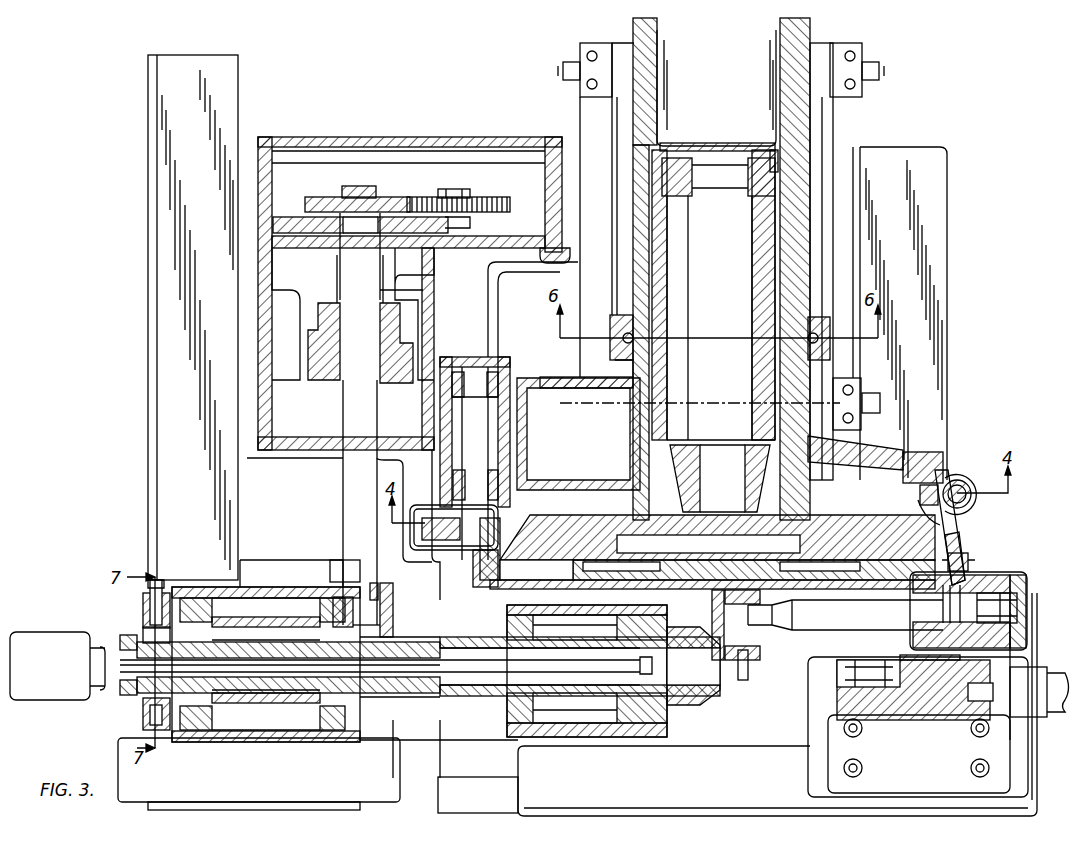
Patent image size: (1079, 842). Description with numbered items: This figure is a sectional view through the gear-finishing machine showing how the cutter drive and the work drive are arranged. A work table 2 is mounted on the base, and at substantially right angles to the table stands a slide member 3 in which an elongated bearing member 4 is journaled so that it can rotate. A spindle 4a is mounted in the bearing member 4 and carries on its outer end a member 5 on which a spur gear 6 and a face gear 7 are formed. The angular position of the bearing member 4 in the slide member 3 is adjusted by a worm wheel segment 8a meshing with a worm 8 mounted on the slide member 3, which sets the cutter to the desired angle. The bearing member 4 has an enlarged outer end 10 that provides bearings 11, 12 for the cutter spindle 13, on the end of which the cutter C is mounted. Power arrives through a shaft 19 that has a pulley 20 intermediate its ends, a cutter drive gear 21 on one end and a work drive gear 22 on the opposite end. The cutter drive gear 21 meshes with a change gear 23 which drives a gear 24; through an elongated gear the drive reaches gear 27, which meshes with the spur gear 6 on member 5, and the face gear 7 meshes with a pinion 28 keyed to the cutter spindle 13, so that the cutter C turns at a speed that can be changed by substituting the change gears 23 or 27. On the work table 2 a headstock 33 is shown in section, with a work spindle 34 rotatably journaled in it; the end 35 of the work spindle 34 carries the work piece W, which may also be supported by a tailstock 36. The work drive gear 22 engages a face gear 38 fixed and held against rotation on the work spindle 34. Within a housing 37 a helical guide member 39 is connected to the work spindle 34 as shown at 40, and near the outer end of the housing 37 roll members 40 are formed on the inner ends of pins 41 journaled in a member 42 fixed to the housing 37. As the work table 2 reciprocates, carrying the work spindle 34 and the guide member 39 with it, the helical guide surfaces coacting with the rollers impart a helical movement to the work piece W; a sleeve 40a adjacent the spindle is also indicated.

The work table 2 is at (518, 760).
The slide member 3 is at (812, 170).
The elongated bearing member 4 is at (668, 165).
The spindle 4a is at (705, 294).
The member 5 is at (935, 548).
The spur gear 6 is at (930, 530).
The face gear 7 is at (965, 560).
The worm 8 is at (955, 480).
The worm wheel segment 8a is at (940, 480).
The enlarged outer end 10 is at (960, 556).
The bearing 11 is at (985, 585).
The bearing 12 is at (782, 640).
The cutter spindle 13 is at (1005, 612).
The shaft 19 is at (352, 482).
The pulley 20 is at (315, 380).
The cutter drive gear 21 is at (322, 202).
The work drive gear 22 is at (392, 618).
The change gear 23 is at (430, 196).
The gear 24 is at (498, 210).
The gear 27 is at (432, 520).
The pinion 28 is at (966, 568).
The headstock 33 is at (628, 735).
The work spindle 34 is at (450, 688).
The end of work spindle 35 is at (700, 690).
The tailstock 36 is at (1010, 782).
The housing 37 is at (222, 587).
The face gear 38 is at (350, 735).
The helical guide member 39 is at (150, 700).
The roll members 40 is at (145, 634).
The sleeve 40a is at (425, 688).
The pins 41 is at (160, 592).
The member 42 is at (148, 612).
The cutter C is at (722, 592).
The work piece W is at (742, 685).